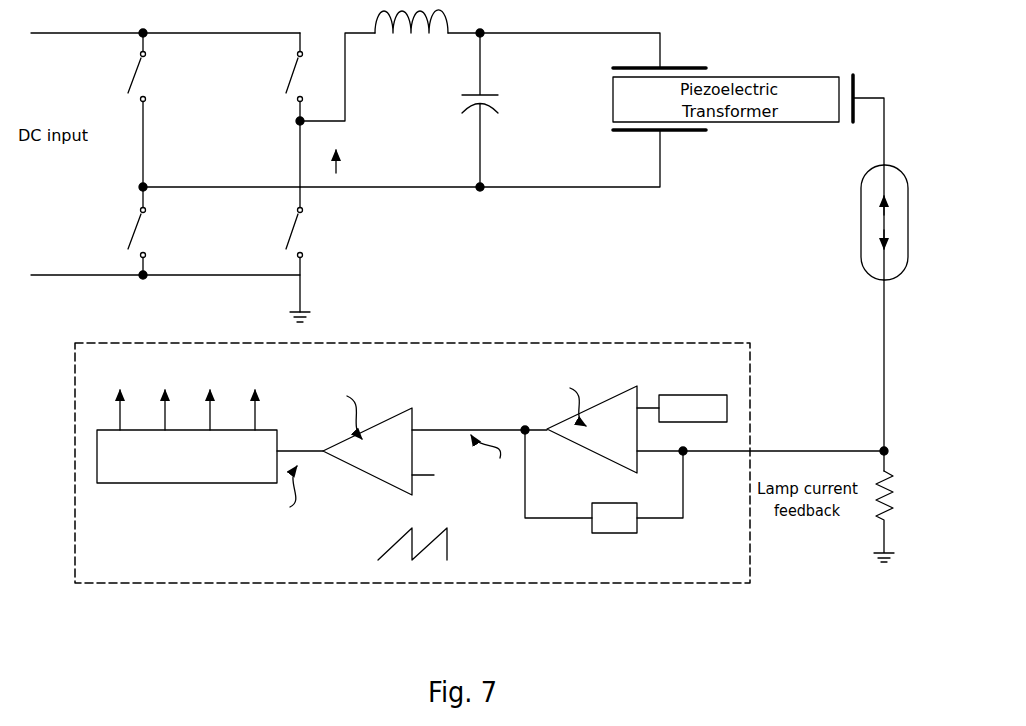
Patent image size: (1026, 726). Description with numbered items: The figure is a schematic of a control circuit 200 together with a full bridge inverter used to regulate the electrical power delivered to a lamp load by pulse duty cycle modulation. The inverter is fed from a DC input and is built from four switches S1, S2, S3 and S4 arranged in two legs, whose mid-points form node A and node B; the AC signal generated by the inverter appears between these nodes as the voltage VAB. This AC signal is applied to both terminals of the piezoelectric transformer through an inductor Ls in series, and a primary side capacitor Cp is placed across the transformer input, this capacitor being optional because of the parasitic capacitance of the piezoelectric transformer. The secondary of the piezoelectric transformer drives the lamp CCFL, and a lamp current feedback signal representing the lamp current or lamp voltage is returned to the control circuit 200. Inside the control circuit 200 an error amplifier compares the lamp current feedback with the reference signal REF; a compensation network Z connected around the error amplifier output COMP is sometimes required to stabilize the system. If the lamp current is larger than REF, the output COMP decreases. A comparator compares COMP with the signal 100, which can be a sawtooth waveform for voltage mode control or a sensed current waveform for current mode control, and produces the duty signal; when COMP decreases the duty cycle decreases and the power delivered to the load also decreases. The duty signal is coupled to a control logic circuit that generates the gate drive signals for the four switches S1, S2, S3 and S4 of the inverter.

The control circuit 200 is at (619, 346).
The signal 100 is at (434, 489).
The switch S1 is at (120, 110).
The switch S2 is at (117, 231).
The switch S3 is at (274, 110).
The switch S4 is at (274, 249).
The inductor Ls is at (392, 23).
The primary side capacitor Cp is at (498, 110).
The node A is at (155, 174).
The node B is at (281, 125).
The voltage VAB is at (369, 158).
The cold cathode fluorescent lamp CCFL is at (849, 222).
The error amplifier output COMP is at (491, 460).
The reference signal REF is at (693, 409).
The compensation network Z is at (614, 518).